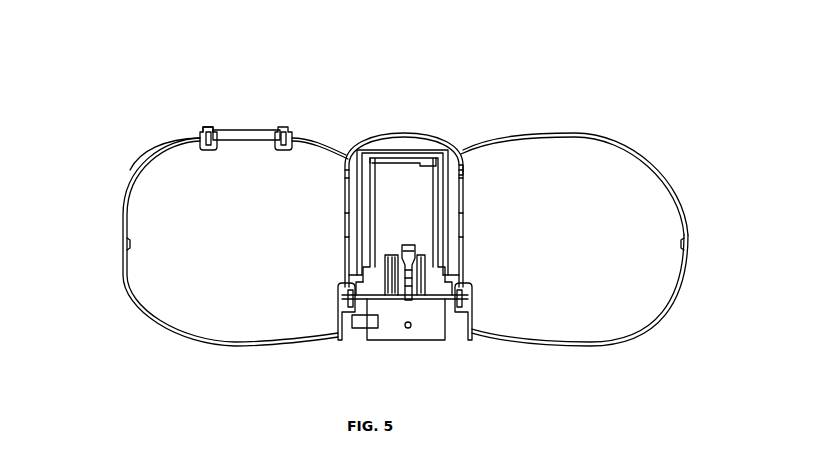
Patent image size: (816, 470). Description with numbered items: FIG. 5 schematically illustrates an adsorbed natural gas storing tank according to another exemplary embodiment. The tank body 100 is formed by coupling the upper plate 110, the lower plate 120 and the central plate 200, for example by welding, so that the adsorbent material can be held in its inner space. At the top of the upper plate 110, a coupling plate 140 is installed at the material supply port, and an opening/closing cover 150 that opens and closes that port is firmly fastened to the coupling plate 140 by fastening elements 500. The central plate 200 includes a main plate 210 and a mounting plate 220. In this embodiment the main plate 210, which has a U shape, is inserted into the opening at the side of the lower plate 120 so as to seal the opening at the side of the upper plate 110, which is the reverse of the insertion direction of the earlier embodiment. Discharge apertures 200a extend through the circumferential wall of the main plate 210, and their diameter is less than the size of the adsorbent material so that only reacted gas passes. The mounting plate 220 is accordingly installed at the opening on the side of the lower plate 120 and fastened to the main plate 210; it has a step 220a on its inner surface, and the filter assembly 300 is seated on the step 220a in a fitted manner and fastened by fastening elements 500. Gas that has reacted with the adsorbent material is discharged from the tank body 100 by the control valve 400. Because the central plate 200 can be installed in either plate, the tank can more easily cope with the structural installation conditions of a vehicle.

The tank body 100 is at (122, 206).
The upper plate 110 is at (620, 136).
The lower plate 120 is at (640, 334).
The coupling plate 140 is at (203, 137).
The opening/closing cover 150 is at (250, 131).
The fastening elements 500 is at (208, 128).
The central plate 200 is at (348, 130).
The main plate 210 is at (415, 132).
The discharge apertures 200a is at (461, 178).
The filter assembly 300 is at (452, 304).
The control valve 400 is at (393, 337).
The mounting plate 220 is at (472, 338).
The step 220a is at (338, 288).